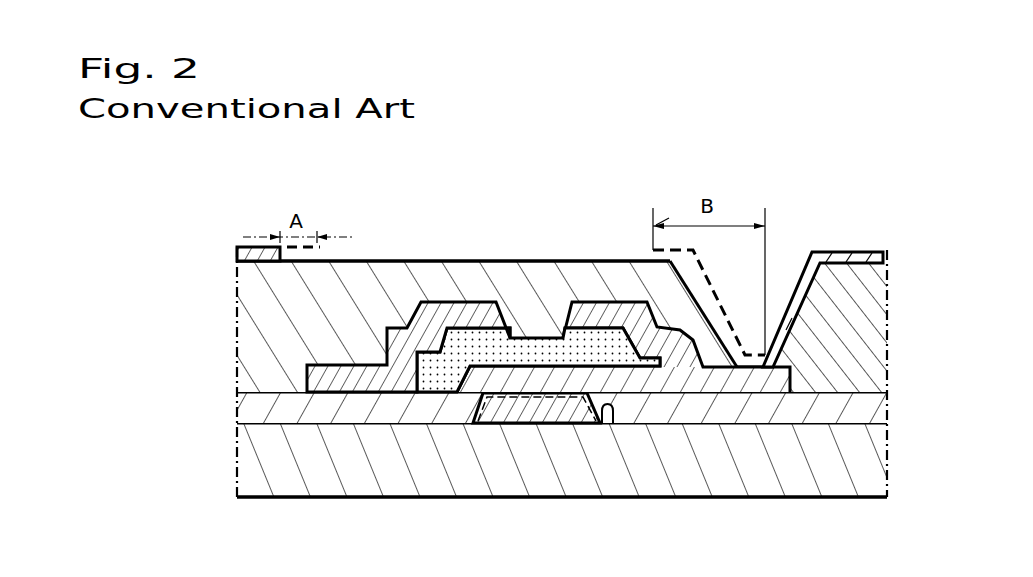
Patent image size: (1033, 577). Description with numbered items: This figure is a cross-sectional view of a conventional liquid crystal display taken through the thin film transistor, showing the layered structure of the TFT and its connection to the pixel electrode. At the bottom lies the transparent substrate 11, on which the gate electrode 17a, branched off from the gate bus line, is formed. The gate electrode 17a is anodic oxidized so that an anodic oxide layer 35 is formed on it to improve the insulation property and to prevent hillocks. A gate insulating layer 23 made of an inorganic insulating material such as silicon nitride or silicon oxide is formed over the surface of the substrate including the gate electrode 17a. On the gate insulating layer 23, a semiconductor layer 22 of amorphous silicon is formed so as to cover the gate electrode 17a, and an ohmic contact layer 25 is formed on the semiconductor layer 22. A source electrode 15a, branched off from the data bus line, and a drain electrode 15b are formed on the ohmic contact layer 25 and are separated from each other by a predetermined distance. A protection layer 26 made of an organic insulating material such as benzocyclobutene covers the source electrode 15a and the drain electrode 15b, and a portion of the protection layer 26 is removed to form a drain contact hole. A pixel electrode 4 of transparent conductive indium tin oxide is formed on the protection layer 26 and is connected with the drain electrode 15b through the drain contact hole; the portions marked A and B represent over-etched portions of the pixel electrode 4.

The transparent substrate 11 is at (772, 467).
The gate insulating layer 23 is at (703, 412).
The gate electrode 17a is at (541, 413).
The anodic oxide layer 35 is at (613, 425).
The ohmic contact layer 25 is at (399, 305).
The protection layer 26 is at (840, 360).
The drain electrode 15b is at (600, 304).
The semiconductor layer 22 is at (424, 392).
The source electrode 15a is at (477, 302).
The pixel electrode 4 is at (852, 256).